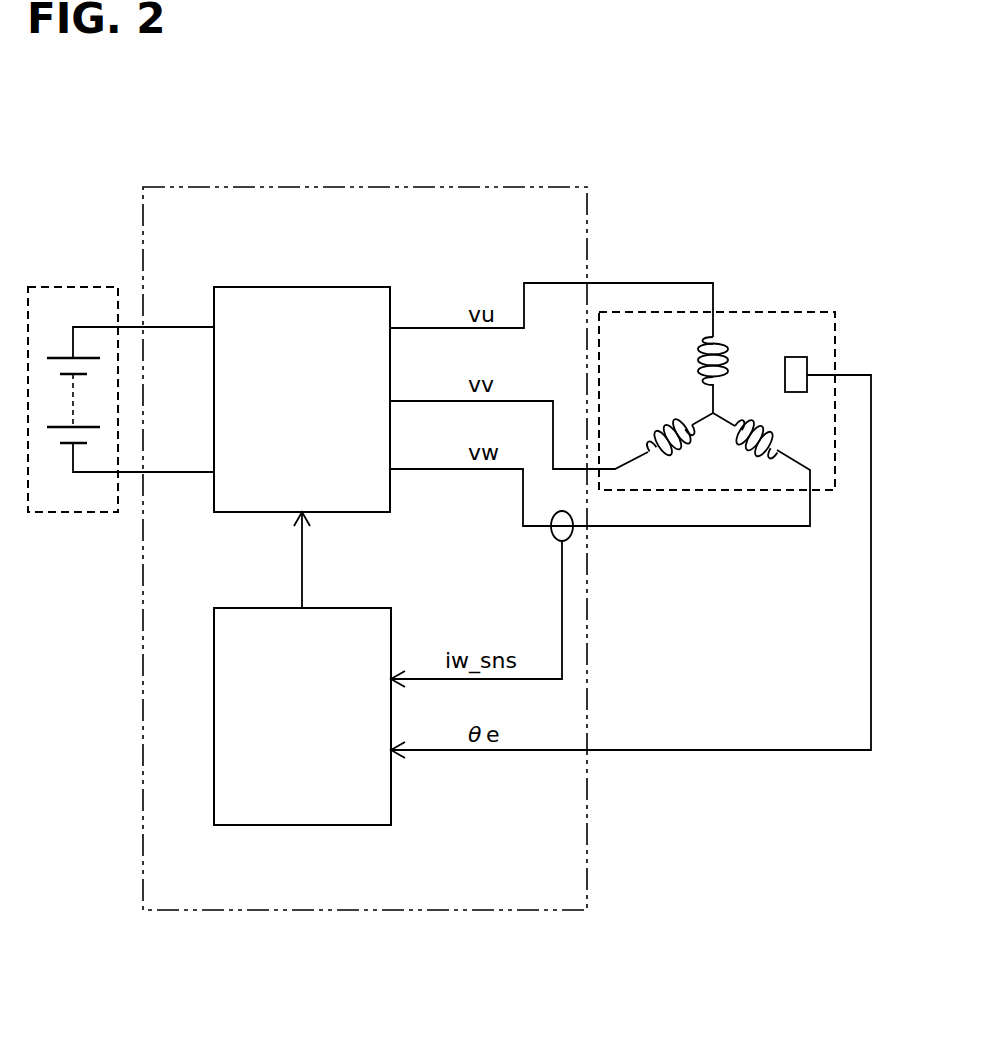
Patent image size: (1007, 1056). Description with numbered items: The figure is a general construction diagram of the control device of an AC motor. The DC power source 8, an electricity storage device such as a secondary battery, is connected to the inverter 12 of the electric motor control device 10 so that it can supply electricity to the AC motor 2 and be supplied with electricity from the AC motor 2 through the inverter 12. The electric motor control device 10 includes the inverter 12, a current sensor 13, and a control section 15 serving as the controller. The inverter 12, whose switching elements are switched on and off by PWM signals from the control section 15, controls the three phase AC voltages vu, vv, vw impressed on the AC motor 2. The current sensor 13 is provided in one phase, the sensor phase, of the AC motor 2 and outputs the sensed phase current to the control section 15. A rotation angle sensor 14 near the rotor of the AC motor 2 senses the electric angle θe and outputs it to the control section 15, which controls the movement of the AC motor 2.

The AC motor 2 is at (785, 311).
The DC power source 8 is at (75, 287).
The electric motor control device 10 is at (399, 187).
The inverter 12 is at (286, 287).
The current sensor 13 is at (553, 541).
The rotation angle sensor 14 is at (800, 357).
The control section 15 is at (305, 825).